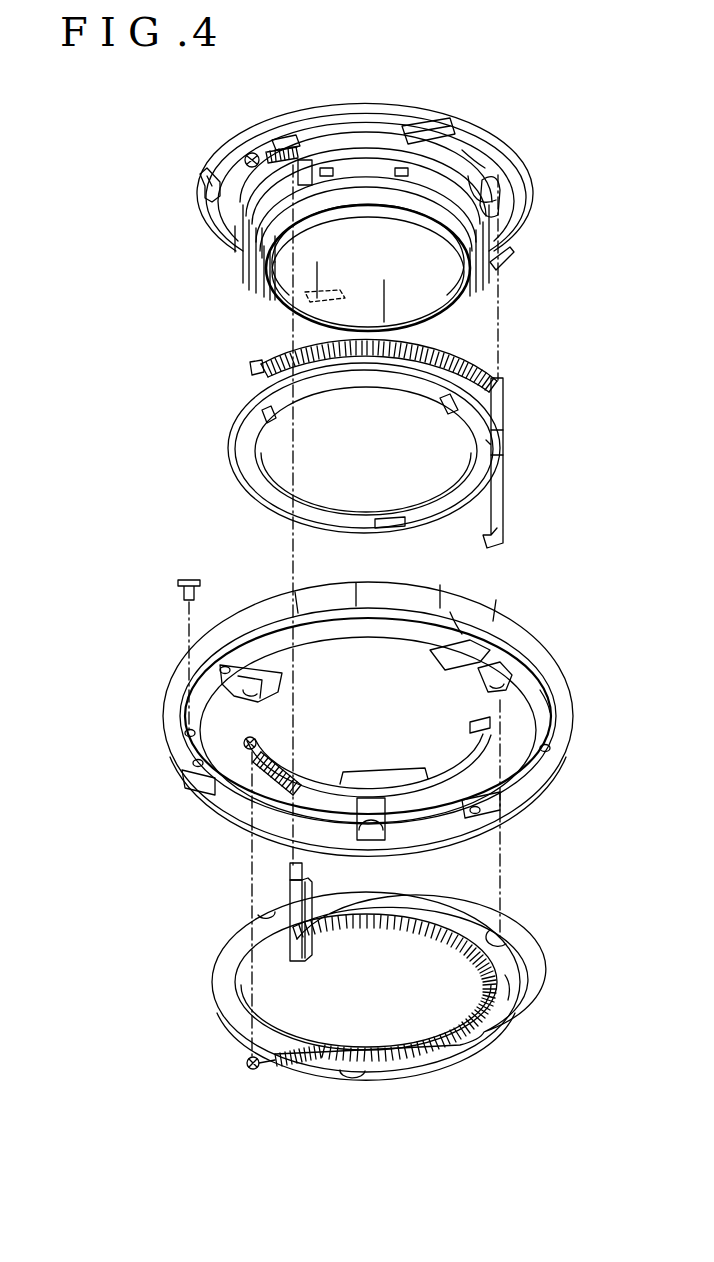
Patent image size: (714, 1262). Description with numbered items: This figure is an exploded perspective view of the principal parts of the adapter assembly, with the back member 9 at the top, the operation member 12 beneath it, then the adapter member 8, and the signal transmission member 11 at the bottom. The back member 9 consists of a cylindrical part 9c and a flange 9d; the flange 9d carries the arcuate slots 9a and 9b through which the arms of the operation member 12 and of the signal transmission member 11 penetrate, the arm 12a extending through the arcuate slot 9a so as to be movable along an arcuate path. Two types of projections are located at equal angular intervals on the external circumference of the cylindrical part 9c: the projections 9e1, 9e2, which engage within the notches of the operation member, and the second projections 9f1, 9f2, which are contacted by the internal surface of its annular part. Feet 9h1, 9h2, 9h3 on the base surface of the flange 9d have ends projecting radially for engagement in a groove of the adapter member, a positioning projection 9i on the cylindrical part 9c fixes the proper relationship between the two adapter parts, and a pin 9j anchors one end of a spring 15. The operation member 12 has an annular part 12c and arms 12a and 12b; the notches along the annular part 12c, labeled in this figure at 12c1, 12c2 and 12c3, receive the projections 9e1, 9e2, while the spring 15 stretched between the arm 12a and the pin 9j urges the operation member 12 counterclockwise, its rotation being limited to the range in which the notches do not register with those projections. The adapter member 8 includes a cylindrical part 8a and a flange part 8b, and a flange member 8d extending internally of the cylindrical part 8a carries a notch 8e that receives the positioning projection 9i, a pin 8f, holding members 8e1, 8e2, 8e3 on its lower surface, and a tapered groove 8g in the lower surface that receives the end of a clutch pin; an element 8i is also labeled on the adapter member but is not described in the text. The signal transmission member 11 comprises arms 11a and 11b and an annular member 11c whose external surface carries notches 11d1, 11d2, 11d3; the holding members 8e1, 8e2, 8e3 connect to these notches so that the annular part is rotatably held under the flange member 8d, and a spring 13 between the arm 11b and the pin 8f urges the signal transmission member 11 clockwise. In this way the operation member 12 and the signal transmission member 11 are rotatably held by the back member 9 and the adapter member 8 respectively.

The back member 9 is at (586, 214).
The arcuate slot 9a is at (494, 198).
The arcuate slot 9b is at (300, 135).
The cylindrical part 9c is at (282, 290).
The flange 9d is at (480, 162).
The projection 9e1 is at (304, 172).
The projection 9e2 is at (490, 222).
The second projection 9f1 is at (326, 178).
The second projection 9f2 is at (402, 178).
The foot 9h1 is at (206, 180).
The foot 9h2 is at (438, 138).
The foot 9h3 is at (505, 262).
The positioning projection 9i is at (318, 298).
The pin 9j is at (248, 160).
The spring 15 is at (265, 153).
The operation member 12 is at (548, 482).
The arm 12a is at (503, 385).
The arm 12b is at (500, 520).
The annular part 12c is at (495, 447).
The notch 12c1 is at (272, 420).
The notch 12c2 is at (390, 524).
The notch 12c3 is at (449, 406).
The adapter member 8 is at (578, 732).
The cylindrical part 8a is at (462, 620).
The flange part 8b is at (545, 698).
The flange member 8d is at (500, 782).
The notch 8e is at (330, 782).
The holding member 8e1 is at (372, 834).
The holding member 8e2 is at (240, 700).
The holding member 8e3 is at (507, 686).
The pin 8f is at (250, 752).
The tapered groove 8g is at (490, 652).
The notch 8i is at (480, 747).
The spring 13 is at (283, 780).
The signal transmission member 11 is at (482, 1056).
The arm 11a is at (292, 866).
The arm 11b is at (298, 946).
The annular member 11c is at (508, 990).
The notch 11d1 is at (500, 938).
The notch 11d2 is at (352, 1076).
The notch 11d3 is at (265, 912).